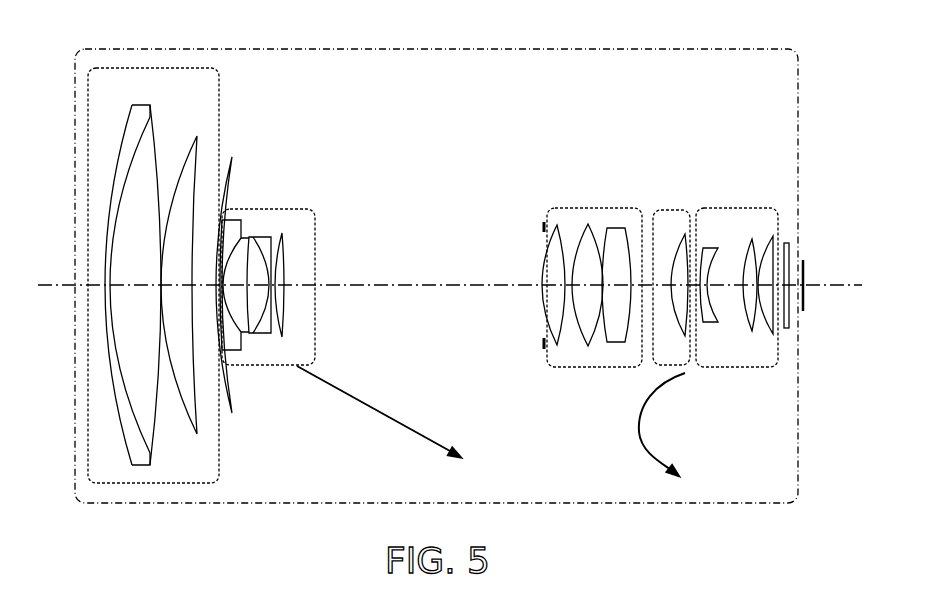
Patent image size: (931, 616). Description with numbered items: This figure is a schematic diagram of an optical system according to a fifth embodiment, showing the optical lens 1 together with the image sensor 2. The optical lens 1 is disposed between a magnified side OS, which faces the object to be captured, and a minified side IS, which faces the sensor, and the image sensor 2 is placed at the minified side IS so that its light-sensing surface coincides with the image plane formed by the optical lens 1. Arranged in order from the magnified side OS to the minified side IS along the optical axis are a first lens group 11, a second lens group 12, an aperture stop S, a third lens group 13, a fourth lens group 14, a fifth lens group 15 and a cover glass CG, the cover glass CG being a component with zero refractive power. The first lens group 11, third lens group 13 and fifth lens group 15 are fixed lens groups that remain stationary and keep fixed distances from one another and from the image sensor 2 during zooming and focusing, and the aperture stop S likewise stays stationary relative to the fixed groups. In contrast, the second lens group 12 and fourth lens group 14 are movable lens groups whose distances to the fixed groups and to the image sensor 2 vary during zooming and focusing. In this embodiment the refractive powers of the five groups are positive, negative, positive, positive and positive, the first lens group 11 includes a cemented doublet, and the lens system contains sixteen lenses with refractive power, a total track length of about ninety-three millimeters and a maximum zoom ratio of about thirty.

The optical lens 1 is at (316, 49).
The image sensor 2 is at (804, 265).
The first lens group 11 is at (218, 115).
The second lens group 12 is at (287, 209).
The third lens group 13 is at (615, 208).
The fourth lens group 14 is at (680, 210).
The fifth lens group 15 is at (760, 208).
The aperture stop S is at (544, 222).
The cover glass CG is at (789, 243).
The magnified side OS is at (36, 269).
The minified side IS is at (869, 269).